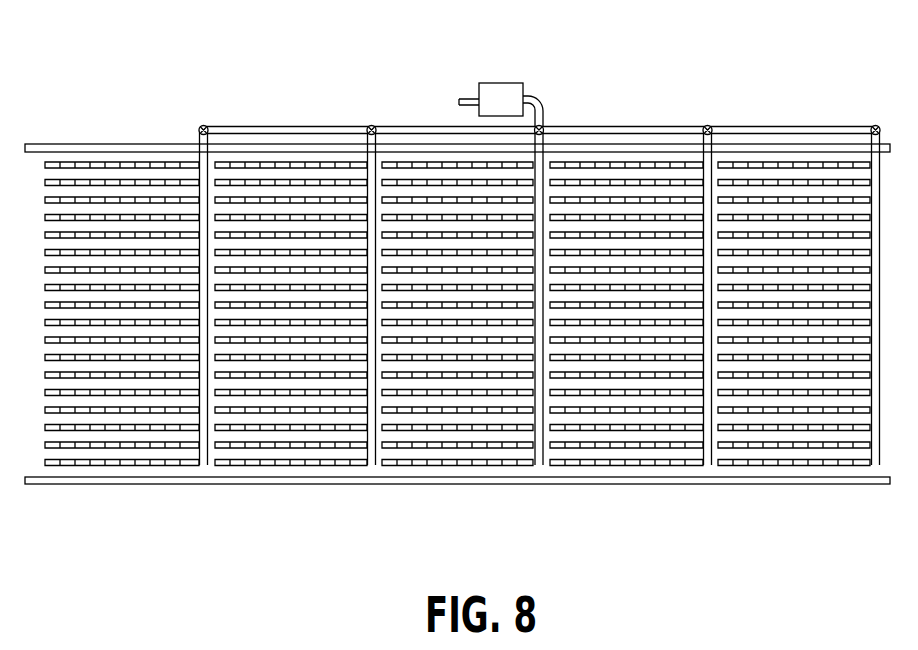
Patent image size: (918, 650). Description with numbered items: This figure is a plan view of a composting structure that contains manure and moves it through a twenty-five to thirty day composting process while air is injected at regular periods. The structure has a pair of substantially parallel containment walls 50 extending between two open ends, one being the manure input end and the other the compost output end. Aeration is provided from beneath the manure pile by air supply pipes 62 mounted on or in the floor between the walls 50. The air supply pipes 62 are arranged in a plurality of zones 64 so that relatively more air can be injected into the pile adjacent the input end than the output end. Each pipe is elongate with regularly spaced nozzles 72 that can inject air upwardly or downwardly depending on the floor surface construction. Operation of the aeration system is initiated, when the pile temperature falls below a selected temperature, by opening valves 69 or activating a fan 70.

The containment walls 50 is at (653, 145).
The air supply pipes 62 is at (371, 402).
The zones 64 is at (203, 487).
The valves 69 is at (203, 125).
The fan 70 is at (504, 83).
The nozzles 72 is at (768, 466).